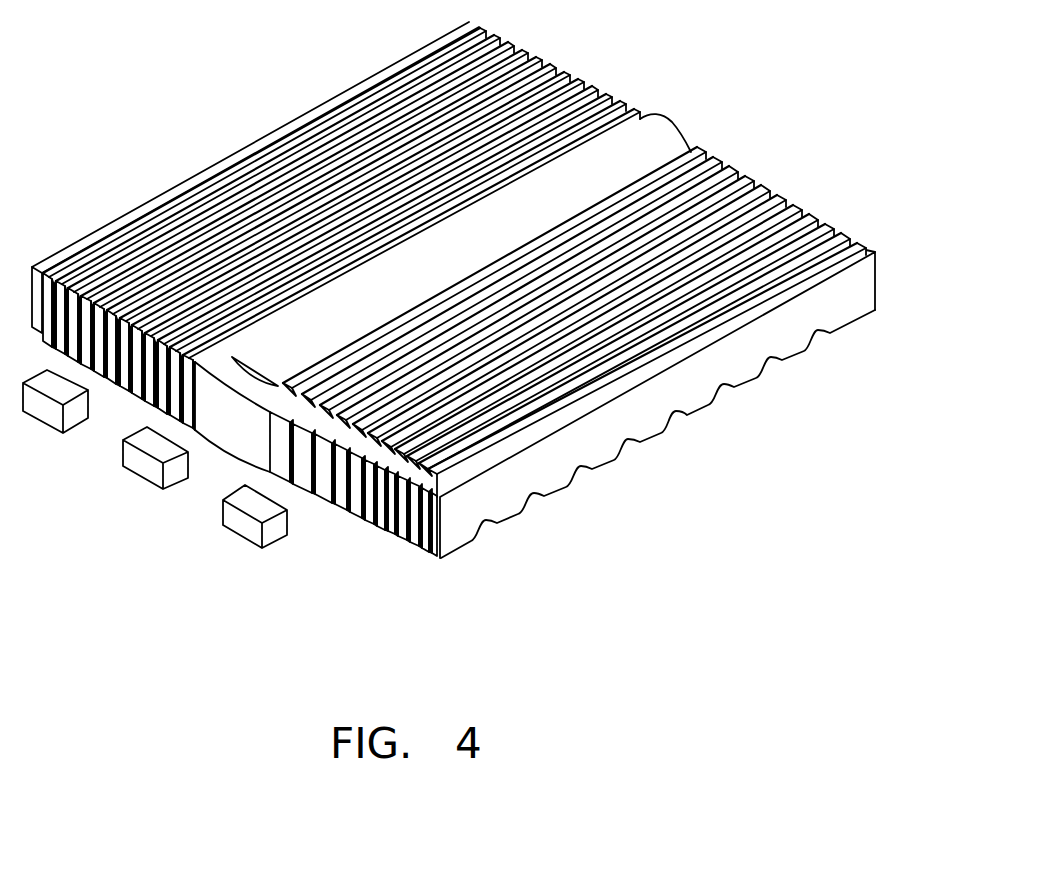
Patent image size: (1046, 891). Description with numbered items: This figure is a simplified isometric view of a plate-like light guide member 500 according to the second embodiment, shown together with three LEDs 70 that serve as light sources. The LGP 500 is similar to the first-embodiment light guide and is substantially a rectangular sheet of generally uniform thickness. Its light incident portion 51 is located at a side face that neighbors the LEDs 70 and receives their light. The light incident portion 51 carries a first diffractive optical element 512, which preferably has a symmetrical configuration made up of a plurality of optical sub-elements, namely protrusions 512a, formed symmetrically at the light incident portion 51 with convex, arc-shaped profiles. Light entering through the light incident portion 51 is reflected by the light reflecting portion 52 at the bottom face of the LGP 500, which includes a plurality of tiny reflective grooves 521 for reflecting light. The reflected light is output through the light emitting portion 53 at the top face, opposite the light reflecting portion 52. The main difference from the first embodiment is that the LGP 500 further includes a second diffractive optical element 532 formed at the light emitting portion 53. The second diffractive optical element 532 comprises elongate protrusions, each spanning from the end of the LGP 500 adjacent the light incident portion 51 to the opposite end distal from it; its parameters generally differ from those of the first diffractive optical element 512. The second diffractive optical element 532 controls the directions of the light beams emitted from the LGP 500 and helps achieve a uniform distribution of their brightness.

The light guide member 500 is at (474, 310).
The second diffractive optical element 532 is at (598, 76).
The light emitting portion 53 is at (481, 262).
The reflective grooves 521 is at (722, 396).
The light reflecting portion 52 is at (657, 405).
The light incident portion 51 is at (233, 401).
The first diffractive optical element 512 is at (353, 494).
The protrusions 512a is at (58, 283).
The LEDs 70 is at (136, 456).